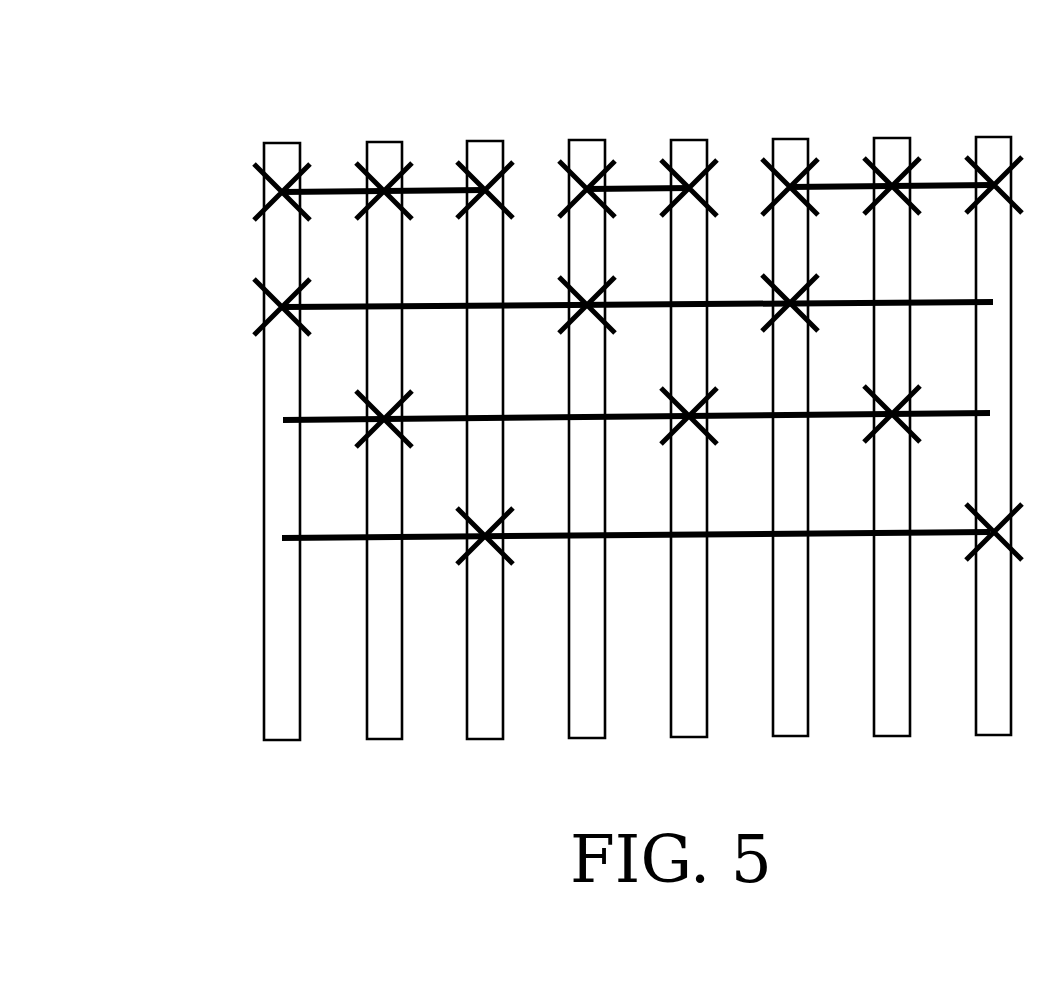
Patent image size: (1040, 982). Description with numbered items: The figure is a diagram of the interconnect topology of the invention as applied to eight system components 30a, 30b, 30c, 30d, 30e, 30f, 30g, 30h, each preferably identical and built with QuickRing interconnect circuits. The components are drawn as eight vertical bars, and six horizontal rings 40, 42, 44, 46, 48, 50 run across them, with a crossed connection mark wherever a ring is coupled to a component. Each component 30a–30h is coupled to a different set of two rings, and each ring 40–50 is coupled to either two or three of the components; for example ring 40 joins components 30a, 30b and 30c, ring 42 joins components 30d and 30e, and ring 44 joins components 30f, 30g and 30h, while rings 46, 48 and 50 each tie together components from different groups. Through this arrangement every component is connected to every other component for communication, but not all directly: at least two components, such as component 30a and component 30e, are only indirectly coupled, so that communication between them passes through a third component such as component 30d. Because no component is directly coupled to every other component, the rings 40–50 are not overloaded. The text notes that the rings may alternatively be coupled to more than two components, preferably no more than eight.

The system component 30a is at (278, 142).
The system component 30b is at (393, 142).
The system component 30c is at (486, 141).
The system component 30d is at (593, 140).
The system component 30e is at (695, 140).
The system component 30f is at (793, 138).
The system component 30g is at (903, 138).
The system component 30h is at (1007, 137).
The ring 40 is at (345, 188).
The ring 42 is at (642, 186).
The ring 44 is at (843, 183).
The ring 46 is at (347, 303).
The ring 48 is at (327, 422).
The ring 50 is at (330, 543).